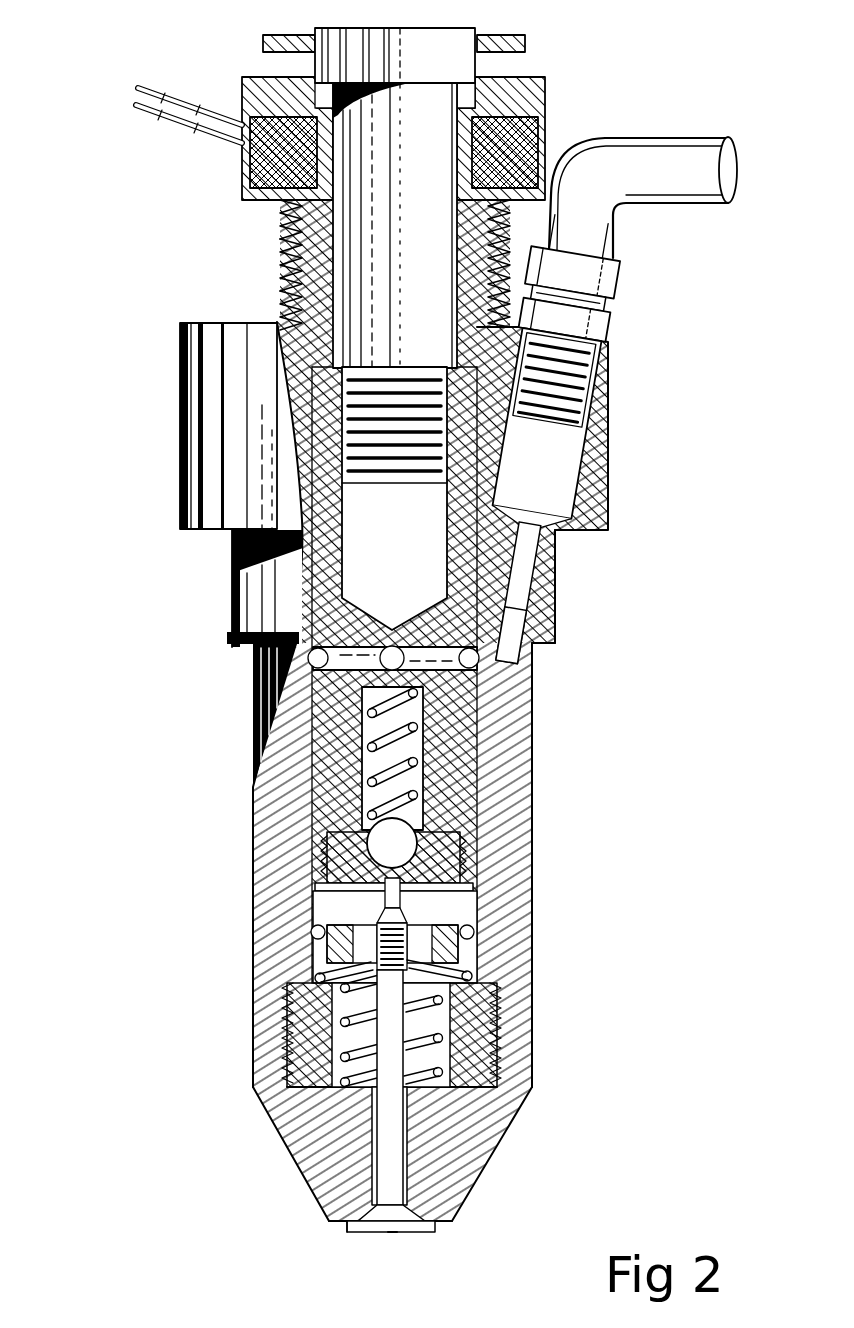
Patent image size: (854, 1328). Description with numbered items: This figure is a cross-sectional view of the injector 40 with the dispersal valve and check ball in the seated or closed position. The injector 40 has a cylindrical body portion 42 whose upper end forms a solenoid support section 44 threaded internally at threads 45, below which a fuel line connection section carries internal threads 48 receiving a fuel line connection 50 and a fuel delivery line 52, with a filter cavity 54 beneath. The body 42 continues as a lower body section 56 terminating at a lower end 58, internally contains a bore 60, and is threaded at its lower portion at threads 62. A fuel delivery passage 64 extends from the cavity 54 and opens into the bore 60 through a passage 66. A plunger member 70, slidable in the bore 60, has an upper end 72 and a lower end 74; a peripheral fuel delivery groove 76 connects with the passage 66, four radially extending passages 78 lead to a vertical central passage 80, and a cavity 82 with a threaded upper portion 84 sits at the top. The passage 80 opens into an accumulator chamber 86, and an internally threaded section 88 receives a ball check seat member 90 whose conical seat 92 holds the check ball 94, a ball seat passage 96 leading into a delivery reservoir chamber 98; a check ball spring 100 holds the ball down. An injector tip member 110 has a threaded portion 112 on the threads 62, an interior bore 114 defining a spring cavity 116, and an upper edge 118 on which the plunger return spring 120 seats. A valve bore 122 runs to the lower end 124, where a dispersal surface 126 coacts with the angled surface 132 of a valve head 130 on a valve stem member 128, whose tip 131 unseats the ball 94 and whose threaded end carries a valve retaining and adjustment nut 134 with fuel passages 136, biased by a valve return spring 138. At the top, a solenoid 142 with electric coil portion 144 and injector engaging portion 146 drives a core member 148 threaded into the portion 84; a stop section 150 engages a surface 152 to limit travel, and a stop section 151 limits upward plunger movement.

The injector 40 is at (138, 446).
The cylindrical body portion 42 is at (612, 500).
The solenoid support section 44 is at (514, 240).
The internal threads 45 is at (282, 255).
The internal threads 48 is at (588, 390).
The fuel line connection 50 is at (618, 276).
The fuel delivery line 52 is at (657, 138).
The filter cavity 54 is at (557, 458).
The lower body section 56 is at (500, 816).
The lower end 58 is at (520, 1105).
The bore 60 is at (300, 447).
The threads 62 is at (495, 1058).
The fuel delivery passage 64 is at (530, 578).
The passage 66 is at (541, 648).
The plunger member 70 is at (480, 705).
The upper end 72 is at (284, 313).
The lower end 74 is at (316, 900).
The peripheral fuel delivery groove 76 is at (520, 627).
The radially extending passages 78 is at (254, 676).
The vertical central passage 80 is at (253, 714).
The cavity 82 is at (260, 571).
The threaded upper portion 84 is at (260, 486).
The accumulator chamber 86 is at (253, 780).
The internally threaded section 88 is at (366, 845).
The ball check seat member 90 is at (330, 870).
The conical seat 92 is at (462, 850).
The check ball 94 is at (480, 800).
The ball seat passage 96 is at (462, 866).
The delivery reservoir chamber 98 is at (401, 900).
The check ball spring 100 is at (425, 732).
The injector tip member 110 is at (492, 1155).
The threaded portion 112 is at (262, 1100).
The interior bore 114 is at (497, 1078).
The spring cavity 116 is at (475, 1040).
The upper edge 118 is at (532, 980).
The plunger return spring 120 is at (318, 935).
The valve bore 122 is at (373, 1196).
The lower end 124 is at (442, 1228).
The dispersal surface 126 is at (362, 1229).
The valve stem member 128 is at (390, 1115).
The valve head 130 is at (390, 1233).
The tip of the valve stem 131 is at (409, 945).
The angled surface 132 is at (454, 1201).
The valve retaining and adjustment nut 134 is at (340, 995).
The fuel passages 136 is at (460, 945).
The valve return spring 138 is at (330, 1040).
The solenoid 142 is at (551, 78).
The electric coil portion 144 is at (538, 133).
The injector engaging portion 146 is at (280, 212).
The core member 148 is at (425, 180).
The stop section 150 is at (287, 58).
The stop section 151 is at (562, 344).
The surface 152 is at (243, 84).